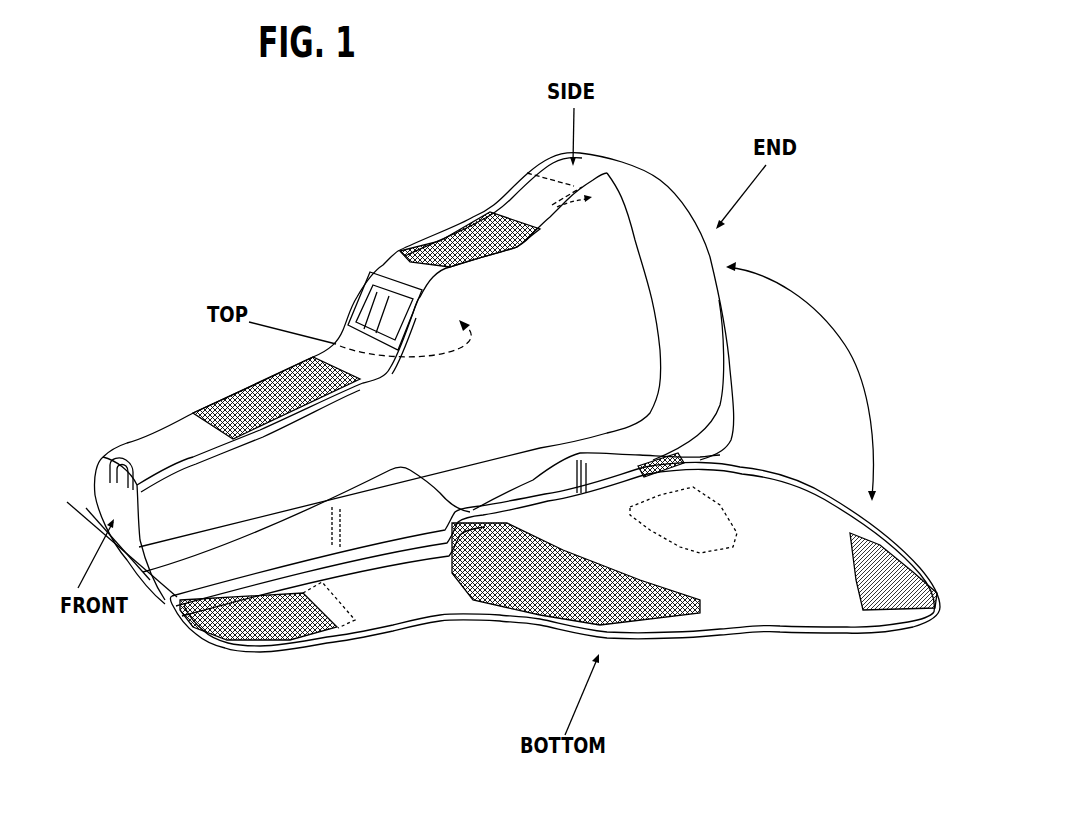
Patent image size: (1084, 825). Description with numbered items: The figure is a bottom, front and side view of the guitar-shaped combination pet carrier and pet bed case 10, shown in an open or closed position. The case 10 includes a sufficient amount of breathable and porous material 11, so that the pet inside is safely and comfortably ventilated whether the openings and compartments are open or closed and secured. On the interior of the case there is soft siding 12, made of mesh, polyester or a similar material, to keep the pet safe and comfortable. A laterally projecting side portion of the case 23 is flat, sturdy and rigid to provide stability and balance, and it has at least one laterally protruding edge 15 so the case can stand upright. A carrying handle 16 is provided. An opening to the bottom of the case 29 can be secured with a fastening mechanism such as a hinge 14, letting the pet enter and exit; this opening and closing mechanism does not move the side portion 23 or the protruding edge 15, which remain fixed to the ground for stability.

The combination pet carrier and pet bed case 10 is at (520, 101).
The breathable and porous material 11 is at (257, 380).
The soft siding 12 is at (558, 200).
The hinge 14 is at (700, 464).
The laterally protruding edge 15 is at (325, 605).
The carrying handle 16 is at (347, 293).
The laterally projecting side portion 23 is at (367, 550).
The opening to the bottom of the case 29 is at (858, 366).